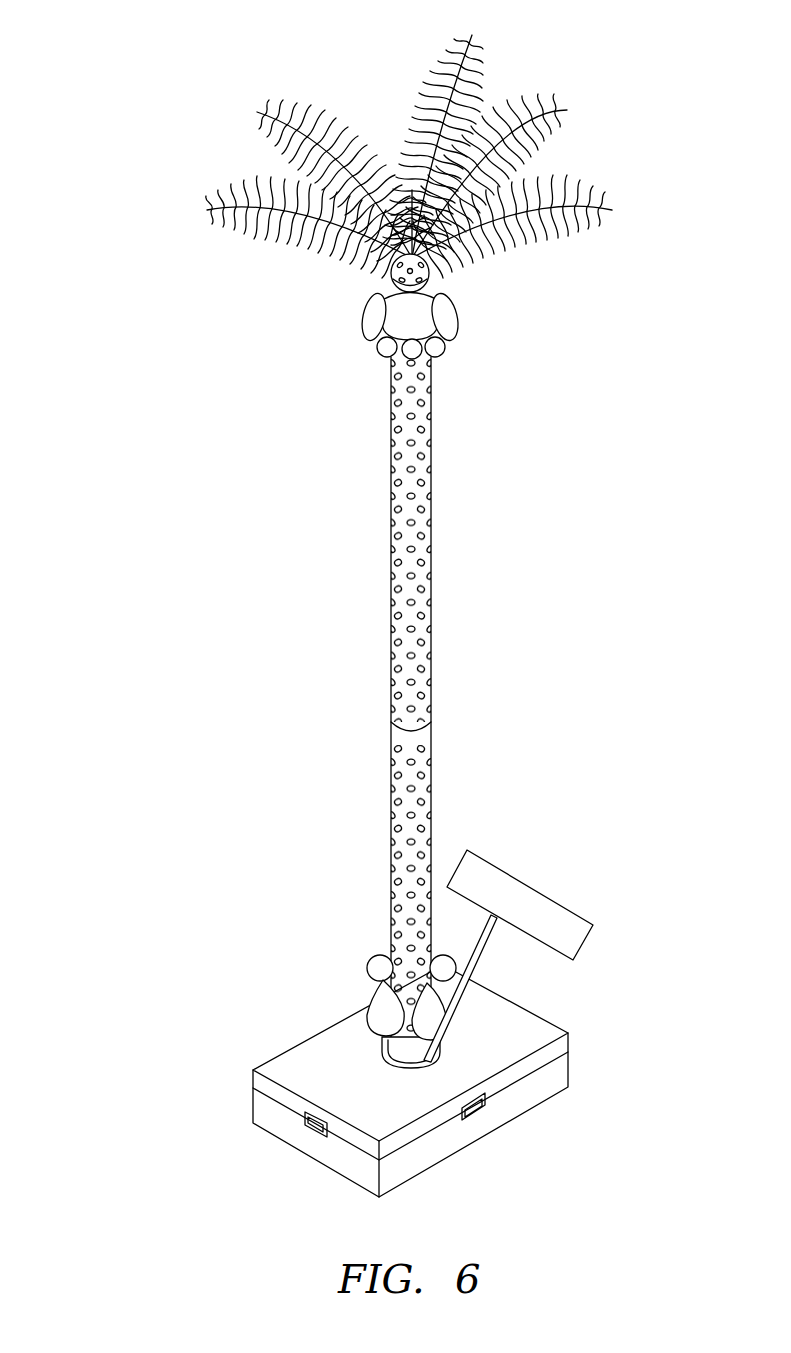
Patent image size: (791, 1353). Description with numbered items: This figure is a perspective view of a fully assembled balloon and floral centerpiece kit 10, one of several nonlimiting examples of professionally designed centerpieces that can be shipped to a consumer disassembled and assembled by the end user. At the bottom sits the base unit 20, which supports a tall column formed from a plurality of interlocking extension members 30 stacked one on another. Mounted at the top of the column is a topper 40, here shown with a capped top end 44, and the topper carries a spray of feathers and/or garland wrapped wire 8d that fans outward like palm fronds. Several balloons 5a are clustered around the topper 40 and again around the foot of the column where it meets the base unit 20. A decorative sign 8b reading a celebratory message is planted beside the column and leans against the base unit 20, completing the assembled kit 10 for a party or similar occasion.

The balloon and floral centerpiece kit 10 is at (366, 616).
The feathers and/or garland wrapped wire 8d is at (320, 113).
The capped top end 44 is at (393, 272).
The topper 40 is at (420, 665).
The balloons 5a is at (370, 327).
The interlocking extension members 30 is at (388, 536).
The base unit 20 is at (269, 1027).
The sign 8b is at (588, 935).